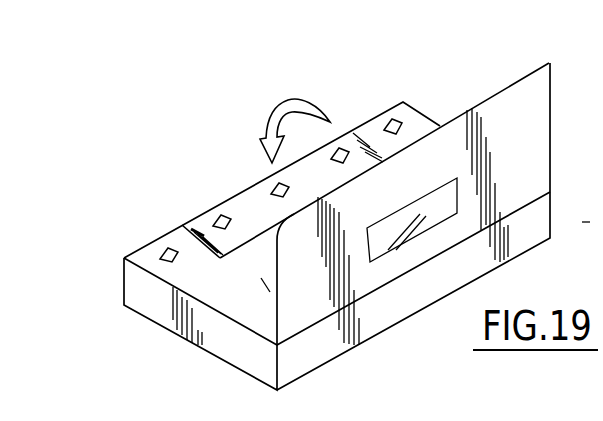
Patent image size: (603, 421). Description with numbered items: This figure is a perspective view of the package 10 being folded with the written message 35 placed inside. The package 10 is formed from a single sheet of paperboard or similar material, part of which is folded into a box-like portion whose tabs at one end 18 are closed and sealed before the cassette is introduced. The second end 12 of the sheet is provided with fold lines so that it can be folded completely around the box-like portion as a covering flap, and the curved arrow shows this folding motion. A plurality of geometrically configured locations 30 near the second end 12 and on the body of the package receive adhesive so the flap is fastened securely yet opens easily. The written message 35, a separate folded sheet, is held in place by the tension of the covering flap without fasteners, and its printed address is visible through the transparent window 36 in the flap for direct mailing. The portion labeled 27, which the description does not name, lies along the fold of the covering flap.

The package 10 is at (103, 321).
The second end 12 is at (507, 87).
The one end of the box-like portion 18 is at (178, 328).
The hinged flap 27 is at (250, 188).
The locations 30 is at (215, 217).
The written message 35 is at (277, 278).
The transparent window 36 is at (418, 212).